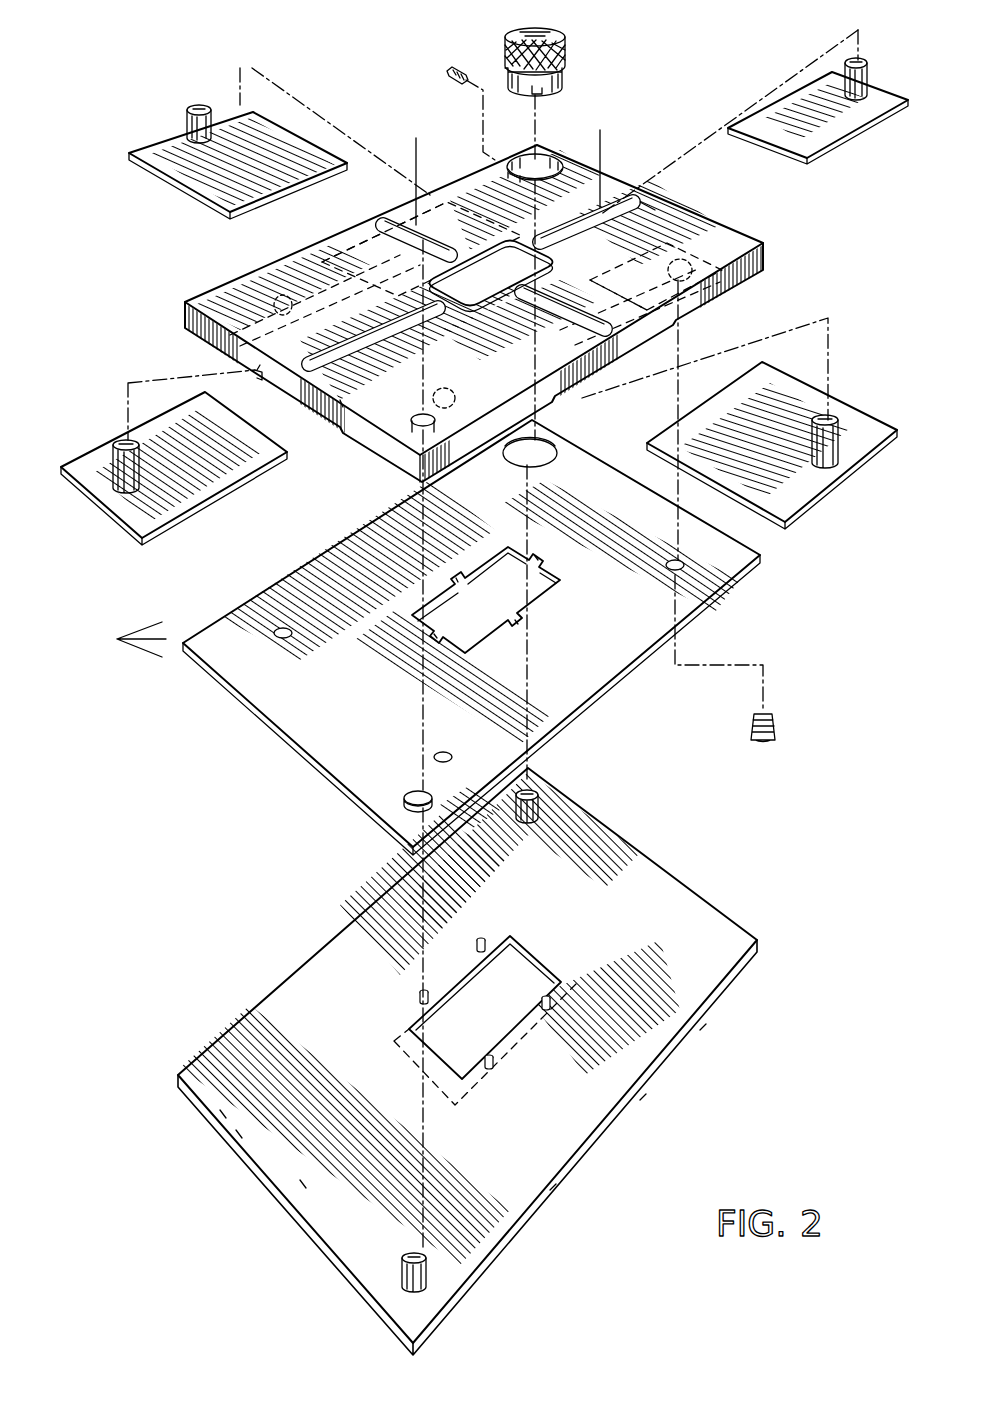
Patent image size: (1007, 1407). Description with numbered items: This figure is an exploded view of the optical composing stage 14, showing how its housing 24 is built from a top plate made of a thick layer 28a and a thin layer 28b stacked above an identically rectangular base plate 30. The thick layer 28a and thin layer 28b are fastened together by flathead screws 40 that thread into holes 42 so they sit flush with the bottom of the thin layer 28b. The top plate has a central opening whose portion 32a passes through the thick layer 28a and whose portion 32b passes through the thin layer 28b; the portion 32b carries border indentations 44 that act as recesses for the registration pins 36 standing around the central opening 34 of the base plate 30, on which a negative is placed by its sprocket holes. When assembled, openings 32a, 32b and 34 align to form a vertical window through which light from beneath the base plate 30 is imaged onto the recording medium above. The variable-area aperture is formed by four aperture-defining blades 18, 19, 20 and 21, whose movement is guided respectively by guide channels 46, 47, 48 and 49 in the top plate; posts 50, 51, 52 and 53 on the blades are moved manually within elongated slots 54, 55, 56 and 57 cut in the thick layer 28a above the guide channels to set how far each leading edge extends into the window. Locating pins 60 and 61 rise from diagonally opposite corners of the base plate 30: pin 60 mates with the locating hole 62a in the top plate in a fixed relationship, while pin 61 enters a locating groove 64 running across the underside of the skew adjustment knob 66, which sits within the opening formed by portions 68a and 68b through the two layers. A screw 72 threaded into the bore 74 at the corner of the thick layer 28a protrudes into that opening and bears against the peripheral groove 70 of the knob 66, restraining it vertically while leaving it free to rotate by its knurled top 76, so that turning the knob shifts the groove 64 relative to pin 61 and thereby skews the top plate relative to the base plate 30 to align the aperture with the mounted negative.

The optical composing stage 14 is at (870, 260).
The aperture-defining blade 18 is at (183, 503).
The aperture-defining blade 19 is at (852, 128).
The aperture-defining blade 20 is at (180, 172).
The aperture-defining blade 21 is at (833, 420).
The housing 24 is at (125, 639).
The thick layer 28a is at (763, 247).
The thin layer 28b is at (215, 688).
The base plate 30 is at (688, 892).
The central opening (portion in thick layer) 32a is at (428, 274).
The central opening (portion in thin layer) 32b is at (548, 570).
The central opening 34 is at (523, 956).
The registration pins 36 is at (489, 1072).
The flathead screw 40 is at (776, 740).
The threaded holes 42 is at (738, 292).
The border indentations 44 is at (505, 636).
The guide channel 46 is at (255, 373).
The guide channel 47 is at (648, 212).
The guide channel 48 is at (336, 236).
The guide channel 49 is at (653, 327).
The post 50 is at (140, 466).
The post 51 is at (866, 70).
The post 52 is at (190, 122).
The post 53 is at (833, 452).
The elongated slot 54 is at (318, 350).
The elongated slot 55 is at (612, 198).
The elongated slot 56 is at (416, 224).
The elongated slot 57 is at (607, 334).
The locating pin 60 is at (425, 1270).
The locating pin 61 is at (542, 795).
The locating hole 62a is at (410, 424).
The locating groove 64 is at (525, 92).
The skew adjustment knob 66 is at (546, 32).
The opening (in thick layer) 68a is at (540, 158).
The opening (in thin layer) 68b is at (560, 455).
The peripheral groove 70 is at (510, 53).
The screw 72 is at (447, 70).
The bore 74 is at (522, 158).
The knurled top 76 is at (566, 60).